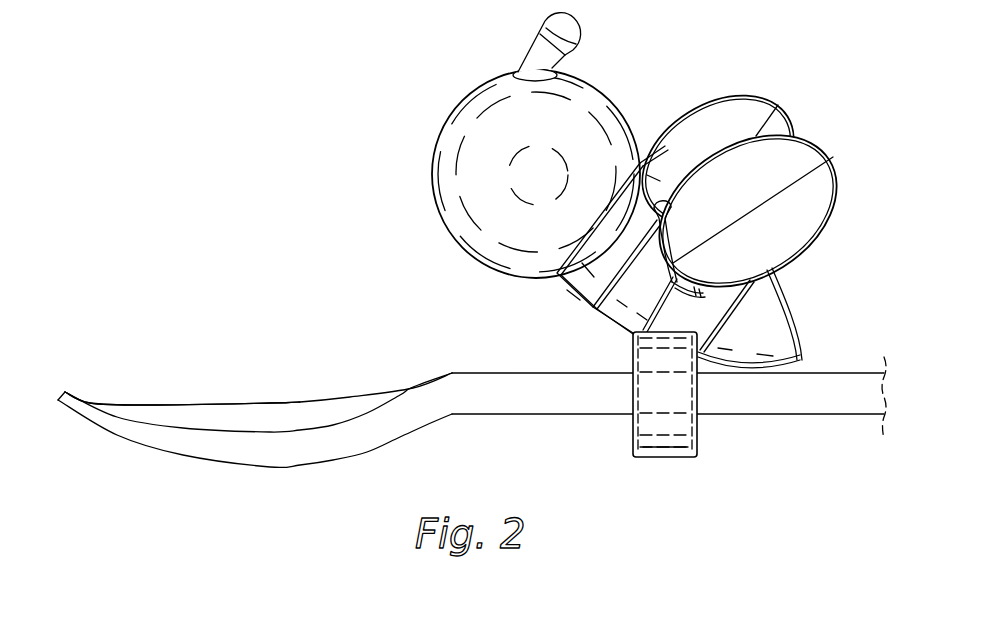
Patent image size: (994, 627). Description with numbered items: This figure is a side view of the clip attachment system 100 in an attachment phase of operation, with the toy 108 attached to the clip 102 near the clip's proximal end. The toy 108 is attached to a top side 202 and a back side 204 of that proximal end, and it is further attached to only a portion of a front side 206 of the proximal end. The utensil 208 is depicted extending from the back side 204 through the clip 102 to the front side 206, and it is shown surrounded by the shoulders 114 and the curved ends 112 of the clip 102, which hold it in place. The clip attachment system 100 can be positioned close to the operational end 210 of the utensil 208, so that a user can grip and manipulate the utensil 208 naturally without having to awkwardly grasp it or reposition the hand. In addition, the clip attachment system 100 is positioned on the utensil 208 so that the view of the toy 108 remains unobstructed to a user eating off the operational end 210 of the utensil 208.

The clip attachment system 100 is at (553, 190).
The clip 102 is at (472, 411).
The toy 108 is at (806, 112).
The curved ends 112 is at (667, 437).
The shoulders 114 is at (645, 432).
The top side 202 is at (677, 330).
The back side 204 is at (717, 353).
The front side 206 is at (628, 337).
The utensil 208 is at (255, 405).
The operational end 210 is at (300, 418).